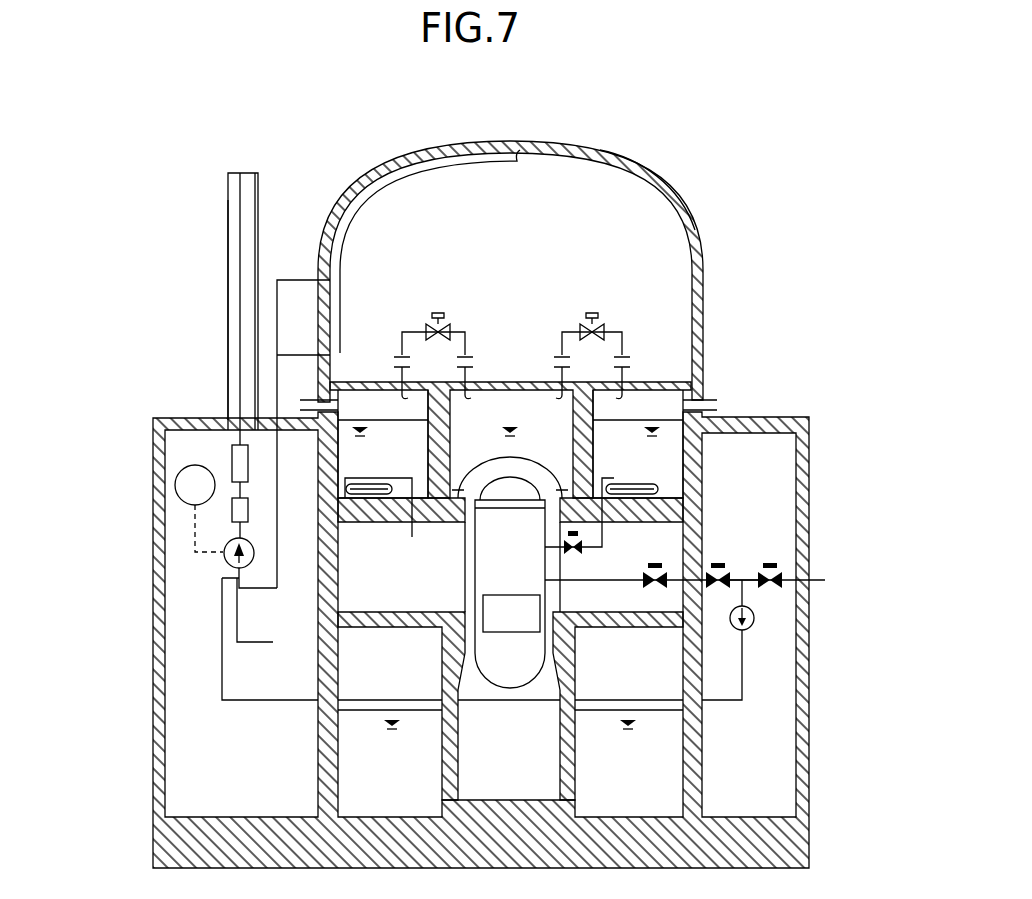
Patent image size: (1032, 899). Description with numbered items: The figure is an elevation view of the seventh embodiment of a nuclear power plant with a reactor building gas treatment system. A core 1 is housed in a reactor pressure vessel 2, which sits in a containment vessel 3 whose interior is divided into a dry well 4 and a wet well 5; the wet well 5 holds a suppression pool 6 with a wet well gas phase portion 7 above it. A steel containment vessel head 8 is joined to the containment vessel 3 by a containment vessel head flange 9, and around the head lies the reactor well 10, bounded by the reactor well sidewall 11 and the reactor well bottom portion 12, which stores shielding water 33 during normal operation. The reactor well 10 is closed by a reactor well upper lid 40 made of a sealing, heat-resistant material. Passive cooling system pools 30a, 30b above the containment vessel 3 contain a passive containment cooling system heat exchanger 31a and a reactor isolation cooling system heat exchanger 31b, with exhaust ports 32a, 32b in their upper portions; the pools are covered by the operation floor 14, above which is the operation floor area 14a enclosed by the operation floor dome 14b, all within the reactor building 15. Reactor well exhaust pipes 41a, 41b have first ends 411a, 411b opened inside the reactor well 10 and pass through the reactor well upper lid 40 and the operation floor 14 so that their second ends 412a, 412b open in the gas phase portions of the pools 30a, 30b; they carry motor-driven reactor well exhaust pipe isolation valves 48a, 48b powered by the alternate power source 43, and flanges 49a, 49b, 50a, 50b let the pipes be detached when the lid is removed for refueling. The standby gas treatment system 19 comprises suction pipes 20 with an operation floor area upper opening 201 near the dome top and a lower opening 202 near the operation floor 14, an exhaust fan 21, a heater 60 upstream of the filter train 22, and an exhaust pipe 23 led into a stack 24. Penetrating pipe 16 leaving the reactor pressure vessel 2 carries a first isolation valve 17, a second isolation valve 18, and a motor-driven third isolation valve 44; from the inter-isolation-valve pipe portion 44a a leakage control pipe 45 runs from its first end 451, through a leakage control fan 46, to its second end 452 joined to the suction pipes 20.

The core 1 is at (511, 613).
The reactor pressure vessel 2 is at (510, 582).
The containment vessel 3 is at (342, 565).
The dry well 4 is at (390, 588).
The wet well 5 is at (343, 683).
The suppression pool 6 is at (501, 748).
The wet well gas phase portion 7 is at (510, 690).
The containment vessel head 8 is at (540, 460).
The containment vessel head flange 9 is at (442, 500).
The reactor well 10 is at (493, 440).
The reactor well sidewall 11 is at (605, 486).
The reactor well bottom portion 12 is at (458, 498).
The operation floor 14 is at (698, 380).
The operation floor area 14a is at (571, 207).
The operation floor dome 14b is at (613, 160).
The reactor building 15 is at (463, 132).
The penetrating pipe 16 is at (822, 585).
The first isolation valve 17 is at (655, 592).
The second isolation valve 18 is at (718, 563).
The standby gas treatment system 19 is at (178, 553).
The suction pipes 20 is at (445, 167).
The exhaust fan 21 is at (226, 563).
The filter train 22 is at (232, 456).
The standby gas treatment system exhaust pipe 23 is at (245, 210).
The stack 24 is at (228, 286).
The passive cooling system pool 30a is at (383, 444).
The passive cooling system pool 30b is at (638, 444).
The passive containment cooling system heat exchanger 31a is at (372, 500).
The reactor isolation cooling system heat exchanger 31b is at (603, 547).
The exhaust port 32a is at (300, 400).
The exhaust port 32b is at (718, 402).
The shielding water 33 is at (527, 425).
The reactor well upper lid 40 is at (517, 382).
The reactor well exhaust pipe 41a is at (452, 328).
The reactor well exhaust pipe 41b is at (613, 330).
The alternate power source 43 is at (176, 498).
The third isolation valve 44 is at (772, 563).
The inter-isolation-valve pipe portion 44a is at (752, 576).
The leakage control pipe 45 is at (723, 702).
The leakage control fan 46 is at (752, 630).
The reactor well exhaust pipe isolation valve 48a is at (430, 318).
The reactor well exhaust pipe isolation valve 48b is at (592, 318).
The flange 49a is at (478, 358).
The flange 49b is at (548, 360).
The flange 50a is at (398, 360).
The flange 50b is at (626, 362).
The heater 60 is at (232, 513).
The operation floor area upper opening 201 is at (517, 155).
The operation floor area lower opening 202 is at (345, 348).
The first end of reactor well exhaust pipe 411a is at (488, 383).
The first end of reactor well exhaust pipe 411b is at (540, 382).
The second end of reactor well exhaust pipe 412a is at (400, 392).
The second end of reactor well exhaust pipe 412b is at (668, 380).
The first end of leakage control pipe 451 is at (753, 624).
The second end of leakage control pipe 452 is at (232, 577).